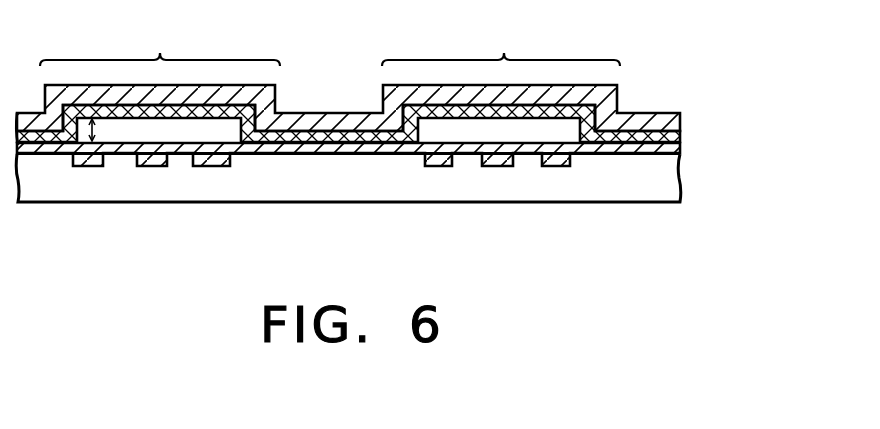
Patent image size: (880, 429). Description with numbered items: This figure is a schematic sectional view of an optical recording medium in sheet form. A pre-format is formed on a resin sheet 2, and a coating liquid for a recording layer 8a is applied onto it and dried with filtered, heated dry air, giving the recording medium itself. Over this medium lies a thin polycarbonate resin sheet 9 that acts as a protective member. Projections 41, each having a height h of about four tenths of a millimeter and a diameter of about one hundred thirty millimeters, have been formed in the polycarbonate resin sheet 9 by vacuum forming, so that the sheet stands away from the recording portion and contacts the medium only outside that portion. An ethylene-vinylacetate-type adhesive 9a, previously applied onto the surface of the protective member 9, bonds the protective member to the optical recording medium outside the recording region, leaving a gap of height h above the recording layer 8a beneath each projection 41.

The projections 41 is at (330, 41).
The polycarbonate resin sheet 9 is at (670, 122).
The ethylene-vinylacetate-type adhesive 9a is at (682, 133).
The recording layer 8a is at (681, 146).
The resin sheet 2 is at (664, 180).
The height of projections h is at (94, 128).